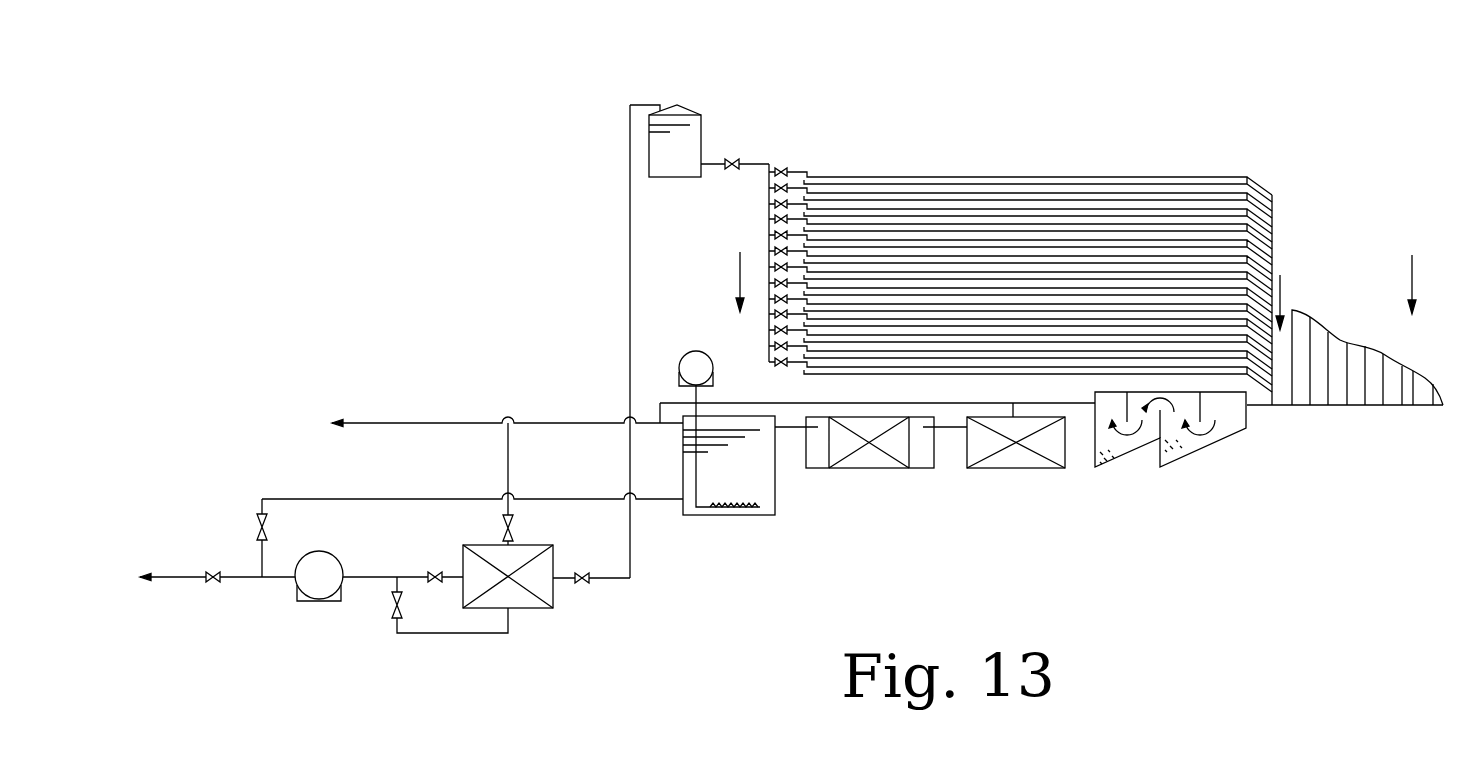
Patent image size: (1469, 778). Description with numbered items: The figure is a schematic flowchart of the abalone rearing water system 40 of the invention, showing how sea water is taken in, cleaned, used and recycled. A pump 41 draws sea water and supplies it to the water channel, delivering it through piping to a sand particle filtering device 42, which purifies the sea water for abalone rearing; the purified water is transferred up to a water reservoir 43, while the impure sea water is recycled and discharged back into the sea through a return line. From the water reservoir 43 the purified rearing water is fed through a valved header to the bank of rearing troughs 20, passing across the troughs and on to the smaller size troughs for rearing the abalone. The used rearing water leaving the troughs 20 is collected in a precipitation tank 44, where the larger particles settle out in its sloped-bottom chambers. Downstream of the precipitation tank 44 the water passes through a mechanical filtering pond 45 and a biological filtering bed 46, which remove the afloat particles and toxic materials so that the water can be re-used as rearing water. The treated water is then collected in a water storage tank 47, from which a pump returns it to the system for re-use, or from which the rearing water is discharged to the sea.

The rearing trough 20 is at (1142, 178).
The fluid circulation system 40 is at (565, 190).
The pump 41 is at (319, 597).
The sand particle filtering device 42 is at (548, 583).
The water reservoir 43 is at (685, 132).
The precipitation tank 44 is at (1222, 416).
The filter 45 is at (994, 458).
The filter 46 is at (854, 465).
The water storage tank 47 is at (727, 456).